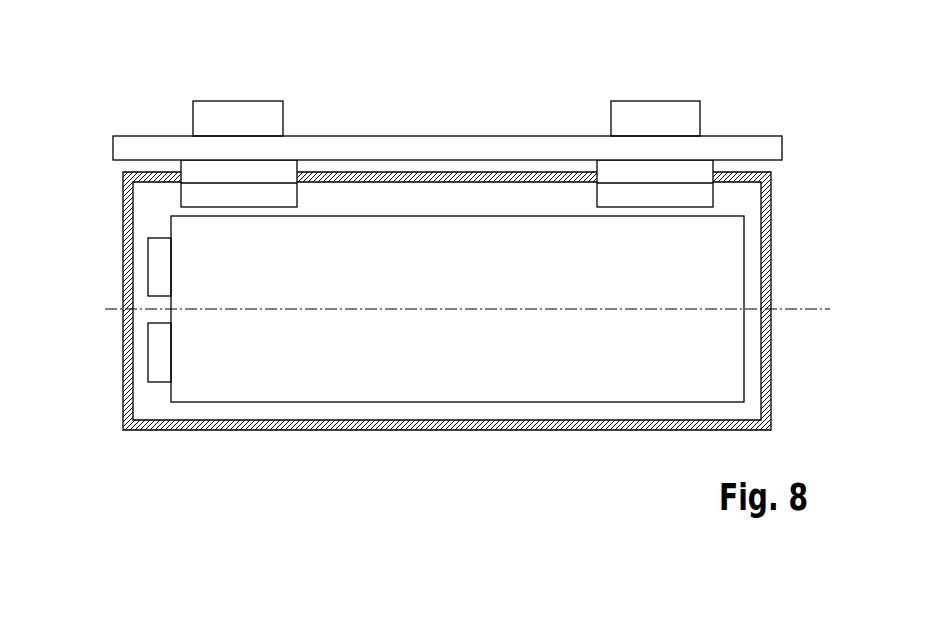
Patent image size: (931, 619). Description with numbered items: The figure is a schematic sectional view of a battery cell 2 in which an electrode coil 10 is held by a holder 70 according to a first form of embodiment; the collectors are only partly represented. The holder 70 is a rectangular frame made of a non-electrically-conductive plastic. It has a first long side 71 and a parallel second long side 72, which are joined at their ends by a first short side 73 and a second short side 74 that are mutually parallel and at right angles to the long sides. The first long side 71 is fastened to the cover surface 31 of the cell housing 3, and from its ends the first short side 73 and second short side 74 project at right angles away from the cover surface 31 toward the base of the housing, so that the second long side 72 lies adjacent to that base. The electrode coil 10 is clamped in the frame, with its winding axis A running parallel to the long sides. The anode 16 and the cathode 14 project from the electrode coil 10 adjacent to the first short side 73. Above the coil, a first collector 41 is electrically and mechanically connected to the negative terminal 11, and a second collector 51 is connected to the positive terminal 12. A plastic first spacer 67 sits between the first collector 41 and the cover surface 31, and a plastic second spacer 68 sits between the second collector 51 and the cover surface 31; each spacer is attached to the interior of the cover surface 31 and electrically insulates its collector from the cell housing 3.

The battery cell 2 is at (131, 73).
The cell housing 3 is at (464, 142).
The electrode coil 10 is at (452, 360).
The negative terminal 11 is at (248, 105).
The positive terminal 12 is at (655, 106).
The cathode 14 is at (160, 356).
The anode 16 is at (160, 264).
The cover surface 31 is at (364, 142).
The first collector 41 is at (190, 197).
The second collector 51 is at (698, 193).
The first spacer 67 is at (290, 167).
The second spacer 68 is at (604, 167).
The holder 70 is at (290, 430).
The first long side 71 is at (412, 177).
The second long side 72 is at (355, 422).
The first short side 73 is at (128, 387).
The second short side 74 is at (771, 371).
The winding axis A is at (807, 305).